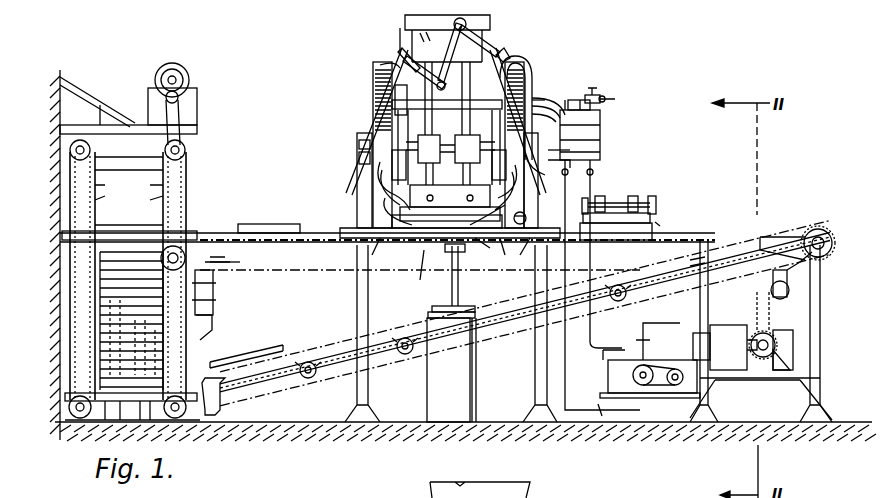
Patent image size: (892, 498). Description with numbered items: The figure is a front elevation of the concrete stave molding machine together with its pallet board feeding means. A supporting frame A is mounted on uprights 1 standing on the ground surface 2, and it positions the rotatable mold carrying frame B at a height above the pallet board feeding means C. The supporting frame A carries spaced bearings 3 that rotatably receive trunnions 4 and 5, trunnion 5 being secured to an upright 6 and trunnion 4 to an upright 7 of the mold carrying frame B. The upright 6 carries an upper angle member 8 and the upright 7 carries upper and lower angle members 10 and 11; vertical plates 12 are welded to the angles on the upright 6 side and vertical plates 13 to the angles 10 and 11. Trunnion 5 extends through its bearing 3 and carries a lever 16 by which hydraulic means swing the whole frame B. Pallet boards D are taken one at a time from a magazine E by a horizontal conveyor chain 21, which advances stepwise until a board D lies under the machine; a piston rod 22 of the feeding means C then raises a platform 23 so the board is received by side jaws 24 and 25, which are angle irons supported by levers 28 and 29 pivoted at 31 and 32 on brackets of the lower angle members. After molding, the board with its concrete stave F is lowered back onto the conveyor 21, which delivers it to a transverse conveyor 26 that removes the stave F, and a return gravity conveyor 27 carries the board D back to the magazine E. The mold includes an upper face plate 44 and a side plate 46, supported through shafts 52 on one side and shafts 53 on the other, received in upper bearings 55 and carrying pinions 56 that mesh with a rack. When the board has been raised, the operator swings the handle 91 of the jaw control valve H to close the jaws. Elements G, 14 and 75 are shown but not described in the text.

The uprights 1 is at (358, 322).
The ground surface 2 is at (312, 422).
The spaced bearings 3 is at (357, 135).
The trunnion 4 is at (356, 120).
The trunnion 5 is at (600, 150).
The upright 6 is at (536, 100).
The upright 7 is at (373, 90).
The upper angle member 8 is at (506, 68).
The upper angle member 10 is at (410, 72).
The lower angle member 11 is at (393, 211).
The vertical plates 12 is at (500, 46).
The vertical plates 13 is at (402, 45).
The toggle link 14 is at (455, 60).
The lever 16 is at (592, 167).
The horizontal conveyor chain 21 is at (243, 270).
The piston rod 22 is at (468, 291).
The platform 23 is at (462, 210).
The side jaw 24 is at (436, 205).
The side jaw 25 is at (500, 258).
The transverse conveyor 26 is at (640, 205).
The return gravity conveyor 27 is at (690, 290).
The levers 28 is at (392, 238).
The levers 29 is at (512, 238).
The pivot 31 is at (382, 178).
The pivot 32 is at (526, 215).
The upper face plate 44 is at (448, 248).
The side plate 46 is at (489, 188).
The shafts 52 is at (395, 98).
The shafts 53 is at (582, 95).
The upper bearings 55 is at (380, 72).
The pinions 56 is at (378, 164).
The cylinder assembly 75 is at (447, 145).
The handle 91 is at (604, 99).
The supporting frame A is at (348, 158).
The mold carrying frame B is at (546, 84).
The pallet board feeding means C is at (486, 398).
The pallet board D is at (300, 230).
The magazine E is at (123, 220).
The concrete stave F is at (660, 226).
The hopper G is at (445, 38).
The jaw control valve H is at (603, 104).